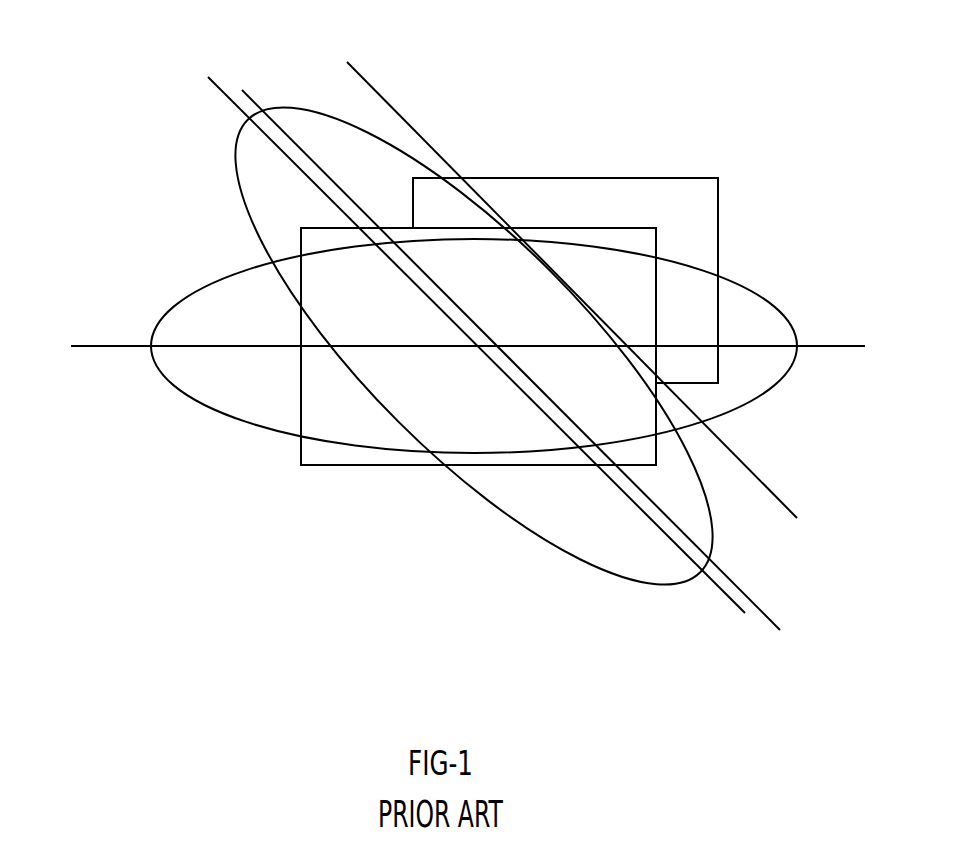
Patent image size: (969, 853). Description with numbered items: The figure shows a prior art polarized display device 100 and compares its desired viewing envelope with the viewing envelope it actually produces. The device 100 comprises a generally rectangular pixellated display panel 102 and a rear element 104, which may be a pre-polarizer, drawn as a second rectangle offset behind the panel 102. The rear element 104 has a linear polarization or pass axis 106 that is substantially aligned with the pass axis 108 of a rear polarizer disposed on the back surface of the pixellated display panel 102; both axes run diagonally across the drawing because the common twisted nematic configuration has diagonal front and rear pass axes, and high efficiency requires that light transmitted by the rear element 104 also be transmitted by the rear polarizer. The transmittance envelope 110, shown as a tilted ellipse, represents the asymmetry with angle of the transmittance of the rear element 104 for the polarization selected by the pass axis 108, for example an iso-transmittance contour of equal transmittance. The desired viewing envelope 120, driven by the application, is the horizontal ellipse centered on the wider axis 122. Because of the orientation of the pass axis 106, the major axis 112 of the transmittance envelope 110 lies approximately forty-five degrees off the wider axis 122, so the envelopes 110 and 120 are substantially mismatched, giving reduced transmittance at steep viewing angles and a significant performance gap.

The polarized display device 100 is at (518, 33).
The pixellated display panel 102 is at (317, 467).
The rear element 104 is at (720, 202).
The pass axis 106 is at (767, 487).
The pass axis of the rear polarizer 108 is at (757, 605).
The transmittance envelope 110 is at (242, 147).
The major axis 112 is at (222, 91).
The desired viewing envelope 120 is at (213, 278).
The wider axis 122 is at (93, 343).